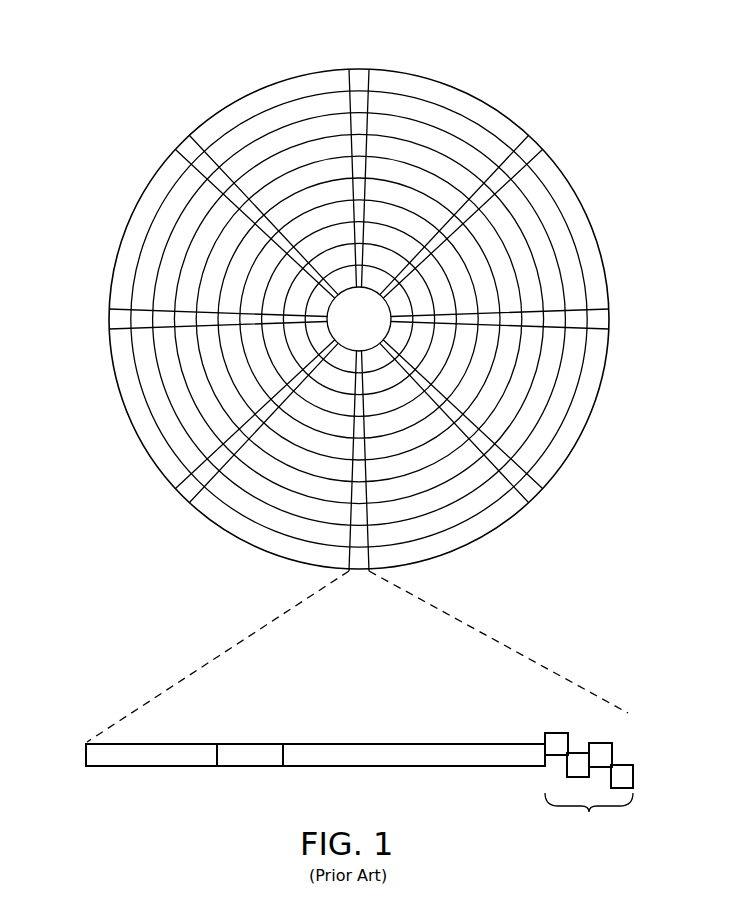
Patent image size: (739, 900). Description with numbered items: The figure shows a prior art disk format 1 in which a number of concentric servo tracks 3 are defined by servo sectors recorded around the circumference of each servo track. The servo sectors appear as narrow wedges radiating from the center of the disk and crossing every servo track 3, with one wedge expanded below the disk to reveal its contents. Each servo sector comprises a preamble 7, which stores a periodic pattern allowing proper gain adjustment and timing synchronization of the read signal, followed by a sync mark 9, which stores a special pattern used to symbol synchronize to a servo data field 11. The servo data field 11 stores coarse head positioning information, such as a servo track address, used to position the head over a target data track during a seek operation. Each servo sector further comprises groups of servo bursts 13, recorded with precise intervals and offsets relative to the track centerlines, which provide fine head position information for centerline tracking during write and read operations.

The disk format 1 is at (176, 73).
The servo tracks 3 is at (445, 118).
The preamble 7 is at (137, 766).
The sync mark 9 is at (247, 766).
The servo data field 11 is at (405, 766).
The servo bursts 13 is at (538, 719).